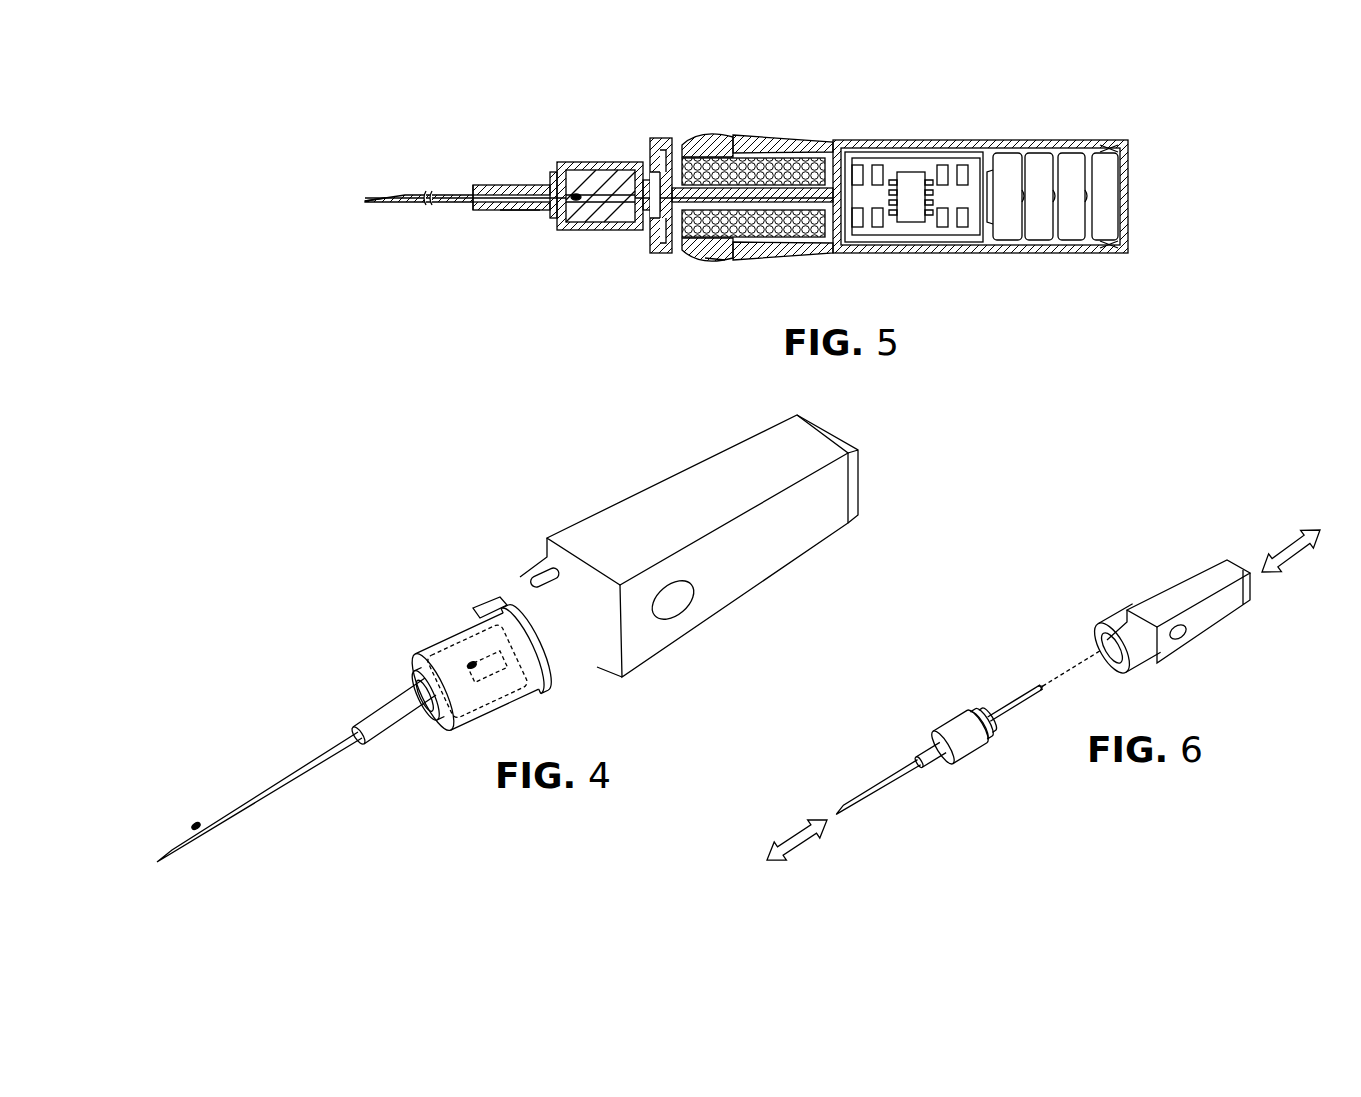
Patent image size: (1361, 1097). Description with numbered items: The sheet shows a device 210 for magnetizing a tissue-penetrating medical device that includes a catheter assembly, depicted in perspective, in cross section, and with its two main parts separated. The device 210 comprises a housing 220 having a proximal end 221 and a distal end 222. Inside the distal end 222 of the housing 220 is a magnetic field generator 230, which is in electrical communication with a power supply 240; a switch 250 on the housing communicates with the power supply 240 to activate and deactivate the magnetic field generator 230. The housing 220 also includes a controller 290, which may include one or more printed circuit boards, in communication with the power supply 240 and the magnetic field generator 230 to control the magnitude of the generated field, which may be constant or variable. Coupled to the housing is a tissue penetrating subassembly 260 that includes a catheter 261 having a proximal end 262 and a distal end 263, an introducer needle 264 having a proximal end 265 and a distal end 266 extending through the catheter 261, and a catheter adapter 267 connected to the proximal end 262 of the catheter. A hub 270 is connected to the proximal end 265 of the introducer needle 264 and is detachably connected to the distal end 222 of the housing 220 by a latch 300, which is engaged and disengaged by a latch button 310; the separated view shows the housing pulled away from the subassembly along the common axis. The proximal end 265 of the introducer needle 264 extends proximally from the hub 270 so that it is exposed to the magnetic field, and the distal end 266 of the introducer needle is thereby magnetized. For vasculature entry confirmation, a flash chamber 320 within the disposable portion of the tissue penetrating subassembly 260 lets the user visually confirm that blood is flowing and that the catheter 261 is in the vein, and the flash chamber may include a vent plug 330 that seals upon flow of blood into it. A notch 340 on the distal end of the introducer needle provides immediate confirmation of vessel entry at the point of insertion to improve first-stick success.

In FIG. 5, the device 210 is at (1012, 98).
In FIG. 5, the housing 220 is at (1024, 140).
In FIG. 4, the housing 220 is at (785, 543).
In FIG. 6, the housing 220 is at (1166, 604).
In FIG. 5, the proximal end 221 is at (1090, 140).
In FIG. 5, the distal end 222 is at (792, 136).
In FIG. 5, the magnetic field generator 230 is at (785, 243).
In FIG. 5, the power supply 240 is at (1040, 232).
In FIG. 4, the switch 250 is at (680, 607).
In FIG. 5, the tissue penetrating subassembly 260 is at (692, 243).
In FIG. 6, the tissue penetrating subassembly 260 is at (976, 758).
In FIG. 5, the catheter 261 is at (400, 191).
In FIG. 5, the proximal end 262 is at (470, 208).
In FIG. 5, the distal end 263 is at (374, 194).
In FIG. 5, the introducer needle 264 is at (687, 160).
In FIG. 6, the introducer needle 264 is at (1020, 716).
In FIG. 6, the proximal end 265 is at (1024, 700).
In FIG. 6, the distal end 266 is at (848, 804).
In FIG. 5, the catheter adapter 267 is at (508, 212).
In FIG. 5, the hub 270 is at (483, 184).
In FIG. 5, the controller 290 is at (909, 222).
In FIG. 5, the latch 300 is at (655, 154).
In FIG. 5, the latch button 310 is at (716, 260).
In FIG. 4, the latch button 310 is at (536, 560).
In FIG. 5, the flash chamber 320 is at (591, 163).
In FIG. 4, the flash chamber 320 is at (479, 671).
In FIG. 5, the vent plug 330 is at (576, 202).
In FIG. 4, the vent plug 330 is at (468, 662).
In FIG. 4, the notch 340 is at (196, 822).